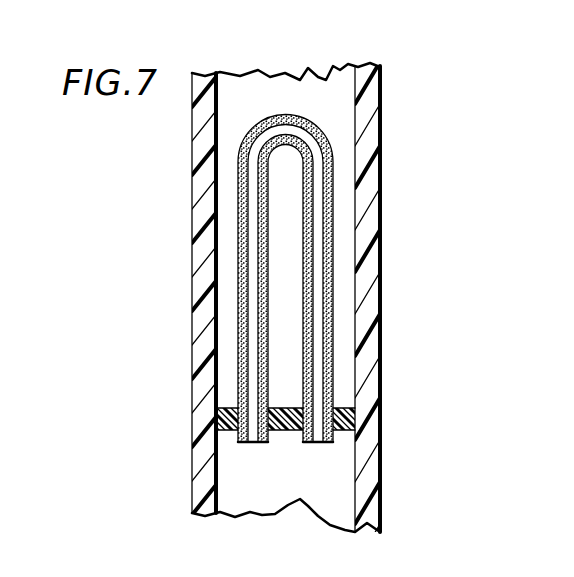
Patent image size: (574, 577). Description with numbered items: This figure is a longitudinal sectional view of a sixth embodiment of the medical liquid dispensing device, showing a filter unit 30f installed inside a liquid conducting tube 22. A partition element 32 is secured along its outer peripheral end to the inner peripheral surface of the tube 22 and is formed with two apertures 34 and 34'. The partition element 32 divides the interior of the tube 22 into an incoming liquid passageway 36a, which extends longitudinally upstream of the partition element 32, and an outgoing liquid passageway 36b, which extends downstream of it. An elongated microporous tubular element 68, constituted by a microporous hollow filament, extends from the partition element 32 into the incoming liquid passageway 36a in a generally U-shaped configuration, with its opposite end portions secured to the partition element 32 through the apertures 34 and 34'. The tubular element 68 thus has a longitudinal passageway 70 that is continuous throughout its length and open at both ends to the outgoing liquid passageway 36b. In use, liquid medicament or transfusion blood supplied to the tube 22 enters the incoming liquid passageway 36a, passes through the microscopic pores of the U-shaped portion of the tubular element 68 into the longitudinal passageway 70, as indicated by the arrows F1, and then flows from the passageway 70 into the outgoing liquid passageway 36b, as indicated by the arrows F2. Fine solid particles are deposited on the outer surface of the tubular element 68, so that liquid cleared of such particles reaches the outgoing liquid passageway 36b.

The liquid conducting tube 22 is at (378, 118).
The partition element 32 is at (344, 410).
The longitudinal passageway 70 is at (325, 122).
The filter unit 30f is at (232, 351).
The microporous tubular element 68 is at (294, 101).
The incoming liquid passageway 36a is at (233, 106).
The outgoing liquid passageway 36b is at (257, 512).
The aperture 34 is at (187, 449).
The aperture 34' is at (400, 427).
The arrows F1 is at (236, 206).
The arrows F2 is at (321, 425).